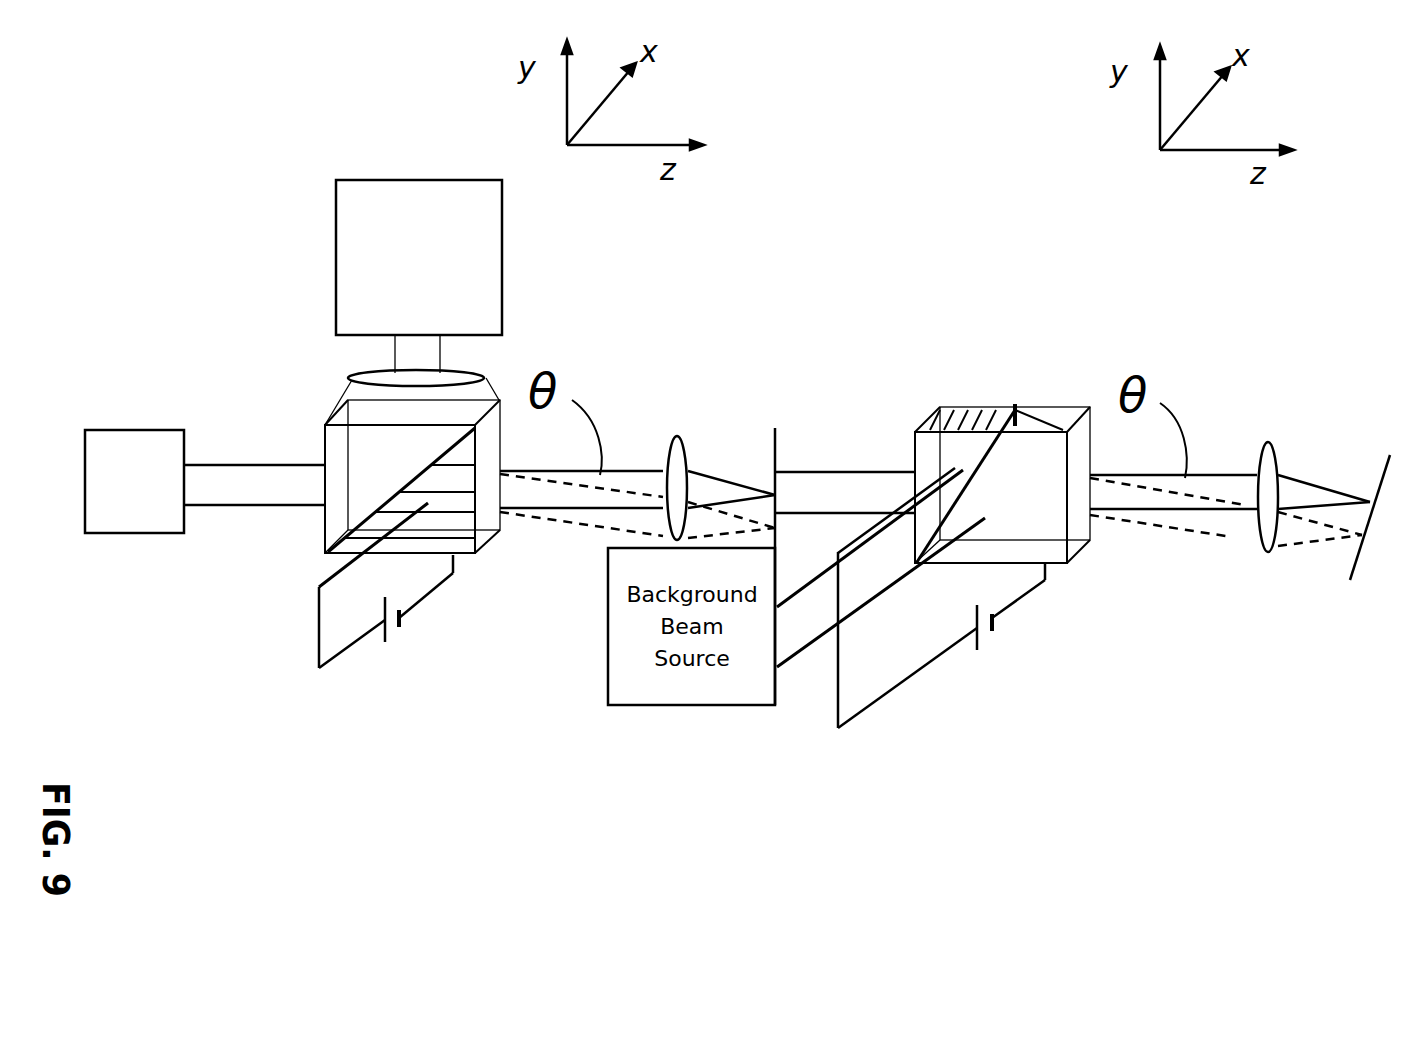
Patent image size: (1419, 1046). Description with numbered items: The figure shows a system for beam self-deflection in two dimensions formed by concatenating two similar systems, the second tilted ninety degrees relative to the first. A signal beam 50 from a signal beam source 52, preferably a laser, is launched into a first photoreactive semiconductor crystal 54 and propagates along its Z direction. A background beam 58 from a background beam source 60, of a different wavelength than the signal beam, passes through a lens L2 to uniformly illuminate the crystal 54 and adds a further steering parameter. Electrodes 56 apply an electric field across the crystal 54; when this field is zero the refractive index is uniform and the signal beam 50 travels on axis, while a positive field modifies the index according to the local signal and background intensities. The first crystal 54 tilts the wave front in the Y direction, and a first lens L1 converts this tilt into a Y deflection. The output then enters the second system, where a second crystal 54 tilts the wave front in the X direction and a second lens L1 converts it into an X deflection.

The signal beam 50 is at (283, 450).
The signal beam source 52 is at (162, 430).
The crystal 54 is at (320, 520).
The electrodes 56 is at (468, 560).
The background beam 58 is at (442, 355).
The background beam source 60 is at (509, 247).
The first lens L1 is at (660, 447).
The lens L2 is at (357, 377).